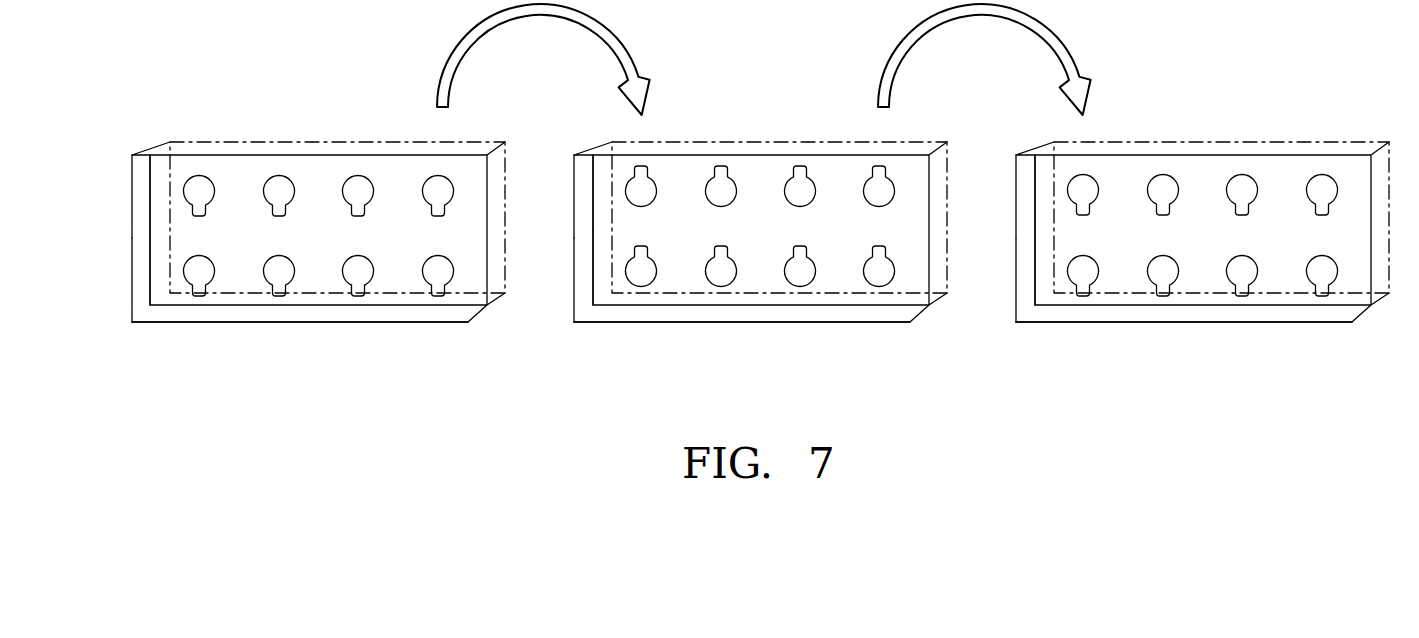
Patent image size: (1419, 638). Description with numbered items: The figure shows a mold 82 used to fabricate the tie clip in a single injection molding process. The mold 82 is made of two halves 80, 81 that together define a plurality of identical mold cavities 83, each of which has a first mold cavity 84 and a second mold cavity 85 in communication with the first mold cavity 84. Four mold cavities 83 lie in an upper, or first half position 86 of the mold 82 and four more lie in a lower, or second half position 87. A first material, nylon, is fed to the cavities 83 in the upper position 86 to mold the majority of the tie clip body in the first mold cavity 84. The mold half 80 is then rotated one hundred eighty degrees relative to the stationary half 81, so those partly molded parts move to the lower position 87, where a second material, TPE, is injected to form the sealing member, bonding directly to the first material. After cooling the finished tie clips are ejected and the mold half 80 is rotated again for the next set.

The mold half 80 is at (235, 155).
The stationary mold half 81 is at (480, 147).
The mold 82 is at (436, 330).
The mold cavities 83 is at (425, 182).
The first mold cavity 84 is at (360, 270).
The second mold cavity 85 is at (357, 293).
The first half position 86 is at (150, 286).
The second half position 87 is at (150, 180).